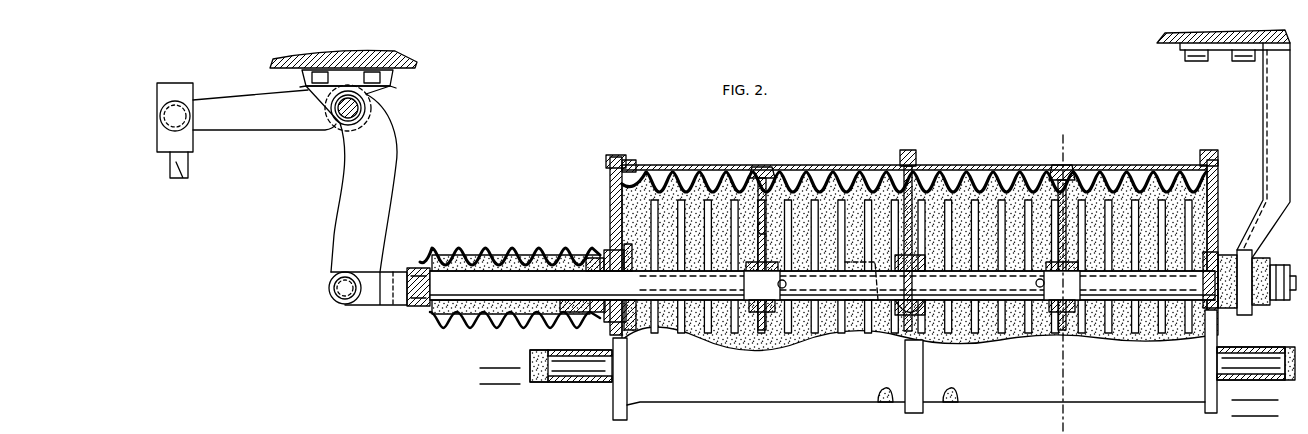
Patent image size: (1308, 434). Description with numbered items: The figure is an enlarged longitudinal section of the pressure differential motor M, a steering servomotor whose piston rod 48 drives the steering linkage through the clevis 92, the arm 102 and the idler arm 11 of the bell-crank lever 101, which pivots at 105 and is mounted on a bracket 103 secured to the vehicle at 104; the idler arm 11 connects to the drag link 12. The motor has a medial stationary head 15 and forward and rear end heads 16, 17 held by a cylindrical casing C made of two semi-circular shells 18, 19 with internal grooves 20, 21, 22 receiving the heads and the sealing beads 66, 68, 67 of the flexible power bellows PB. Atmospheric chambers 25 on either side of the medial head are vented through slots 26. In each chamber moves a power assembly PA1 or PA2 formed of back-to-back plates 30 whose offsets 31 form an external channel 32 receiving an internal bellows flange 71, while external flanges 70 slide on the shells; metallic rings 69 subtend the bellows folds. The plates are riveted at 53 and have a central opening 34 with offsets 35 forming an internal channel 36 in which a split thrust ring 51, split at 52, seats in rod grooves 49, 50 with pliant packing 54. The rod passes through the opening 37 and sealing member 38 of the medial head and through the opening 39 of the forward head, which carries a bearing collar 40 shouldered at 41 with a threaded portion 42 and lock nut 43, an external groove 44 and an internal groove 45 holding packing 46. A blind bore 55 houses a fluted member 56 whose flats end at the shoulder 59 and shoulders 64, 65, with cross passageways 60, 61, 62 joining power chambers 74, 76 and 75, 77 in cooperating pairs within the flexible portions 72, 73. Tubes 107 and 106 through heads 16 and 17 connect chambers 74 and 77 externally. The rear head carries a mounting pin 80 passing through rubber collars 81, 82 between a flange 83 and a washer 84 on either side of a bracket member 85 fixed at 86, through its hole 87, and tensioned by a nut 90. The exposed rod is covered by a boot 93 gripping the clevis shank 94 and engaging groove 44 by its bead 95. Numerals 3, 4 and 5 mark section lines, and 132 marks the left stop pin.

The section line 3- 3 is at (1075, 421).
The section line 4- 4 is at (1046, 355).
The section line 5- 5 is at (790, 375).
The idler arm 11 is at (290, 118).
The drag link 12 is at (187, 190).
The medial stationary head 15 is at (893, 333).
The forward stationary head 16 is at (612, 205).
The rear stationary head 17 is at (1216, 200).
The semi-circular shell 18 is at (972, 178).
The semi-circular shell 19 is at (1010, 398).
The internal groove 20 is at (608, 159).
The internal groove 21 is at (916, 182).
The internal groove 22 is at (1210, 150).
The atmospheric chamber 25 is at (985, 180).
The openings or slots 26 is at (1178, 403).
The circular plates 30 is at (757, 332).
The offset 31 is at (1045, 185).
The external annular channel 32 is at (1050, 170).
The central circular opening 34 is at (772, 304).
The offset 35 is at (768, 268).
The internal annular channel 36 is at (756, 301).
The circular opening 37 is at (925, 268).
The ring-like flexible sealing member 38 is at (922, 262).
The circular opening 39 is at (622, 254).
The bearing collar 40 is at (600, 256).
The shoulder 41 is at (602, 320).
The reduced diameter portion 42 is at (634, 326).
The lock nut 43 is at (638, 342).
The external annular groove 44 is at (580, 314).
The internal annular groove 45 is at (592, 262).
The ring-like packing 46 is at (580, 320).
The piston rod 48 is at (985, 328).
The external groove 49 is at (742, 302).
The external groove 50 is at (1075, 290).
The contractible thrust ring 51 is at (1074, 301).
The angular split 52 is at (1048, 318).
The rivets 53 is at (768, 226).
The pliant packing member 54 is at (1052, 335).
The blind axial bore 55 is at (870, 265).
The fluted cylindrical member 56 is at (855, 330).
The shoulder 59 is at (787, 284).
The cross passageway 60 is at (792, 280).
The cross passageway 61 is at (740, 282).
The cross passageway 62 is at (1036, 282).
The end shoulder 64 is at (705, 265).
The end shoulder 65 is at (1052, 268).
The sealing bead 66 is at (636, 166).
The sealing bead 67 is at (1200, 158).
The medial external sealing bead 68 is at (907, 150).
The metallic ring 69 is at (1170, 332).
The external flange 70 is at (1060, 165).
The internal flange 71 is at (1068, 178).
The flexible portion 72 is at (838, 186).
The flexible portion 73 is at (1140, 190).
The power chamber 74 is at (664, 200).
The power chamber 75 is at (797, 185).
The power chamber 76 is at (937, 185).
The power chamber 77 is at (1108, 178).
The mounting pin 80 is at (1266, 308).
The rubber collar 81 is at (1216, 254).
The rubber collar 82 is at (1244, 316).
The flange 83 is at (1228, 310).
The washer 84 is at (1258, 305).
The bracket member 85 is at (1263, 92).
The fixed vehicle attachment 86 is at (1180, 47).
The hole 87 is at (1264, 180).
The nut 90 is at (1280, 265).
The clevis 92 is at (384, 303).
The flexible protecting boot 93 is at (488, 250).
The threaded shank 94 is at (414, 268).
The internal bead 95 is at (608, 262).
The bell-crank lever 101 is at (339, 187).
The arm 102 is at (390, 166).
The bracket 103 is at (372, 108).
The fixed vehicle attachment 104 is at (418, 63).
The pivotal connection 105 is at (339, 291).
The rigid tube 106 is at (1228, 365).
The rigid tube 107 is at (606, 372).
The left stop pin 132 is at (536, 383).
The cylindrical casing C is at (795, 395).
The pressure differential motor M is at (825, 157).
The forward power assembly PA1 is at (695, 333).
The rear power assembly PA2 is at (1172, 320).
The flexible power bellows PB is at (1128, 182).